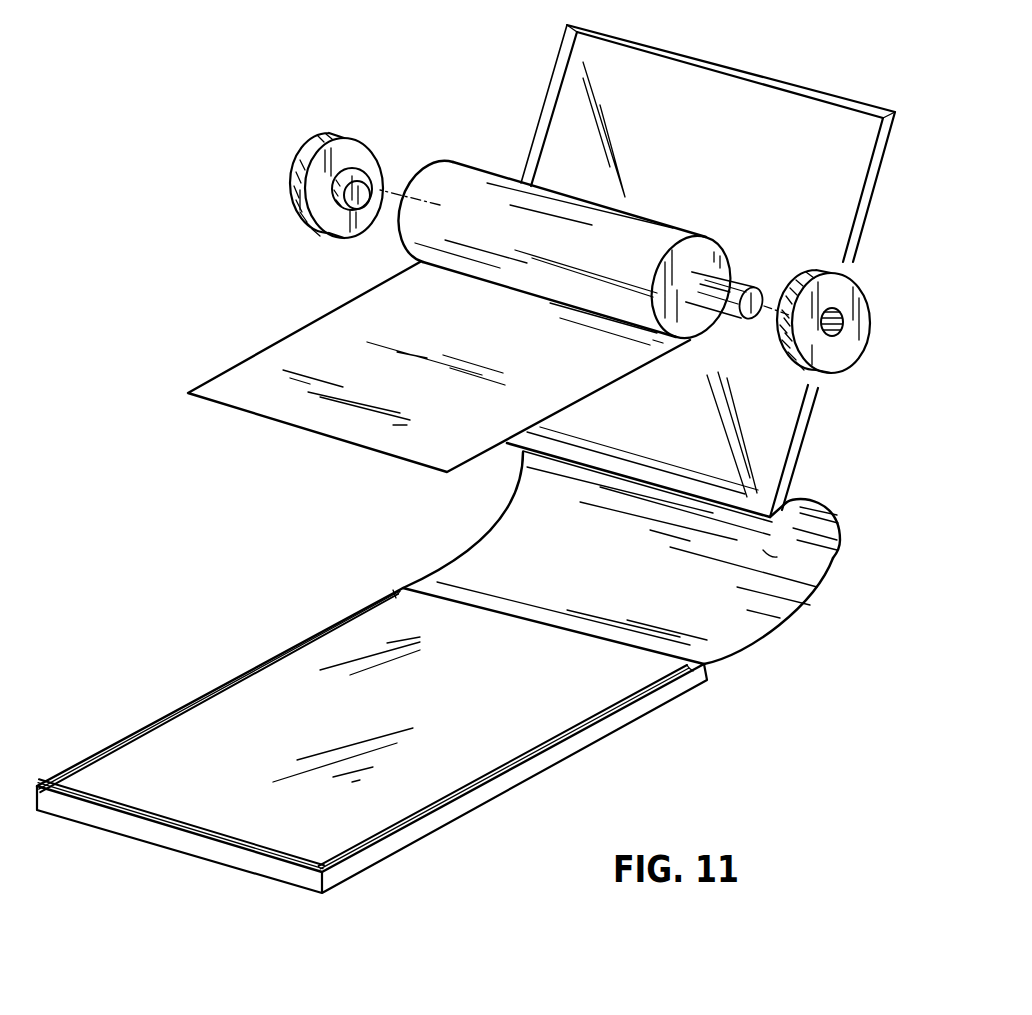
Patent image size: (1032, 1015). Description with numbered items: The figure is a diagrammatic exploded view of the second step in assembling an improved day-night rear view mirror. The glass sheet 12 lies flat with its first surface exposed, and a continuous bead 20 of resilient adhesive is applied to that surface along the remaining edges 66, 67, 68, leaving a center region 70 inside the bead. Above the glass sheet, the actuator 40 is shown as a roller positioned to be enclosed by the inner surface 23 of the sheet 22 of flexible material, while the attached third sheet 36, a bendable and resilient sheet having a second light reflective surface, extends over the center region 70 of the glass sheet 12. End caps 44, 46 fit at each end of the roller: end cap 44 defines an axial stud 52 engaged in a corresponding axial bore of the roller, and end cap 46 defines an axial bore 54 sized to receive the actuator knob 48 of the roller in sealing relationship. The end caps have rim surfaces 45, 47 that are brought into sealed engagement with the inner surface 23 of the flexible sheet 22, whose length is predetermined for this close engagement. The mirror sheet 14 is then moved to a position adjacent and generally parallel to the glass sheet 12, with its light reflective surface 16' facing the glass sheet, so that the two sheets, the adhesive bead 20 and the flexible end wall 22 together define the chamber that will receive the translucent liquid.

The first sheet of transparent material 12 is at (463, 807).
The second sheet 14 is at (847, 178).
The opposed surface of the mirror sheet 16' is at (670, 279).
The first wall of resilient adhesive material 20 is at (372, 740).
The sheet of flexible material 22 is at (638, 557).
The inner surface of the flexible wall 23 is at (827, 570).
The third sheet 36 is at (262, 365).
The actuator 40 is at (325, 253).
The end cap 44 is at (315, 164).
The rim surface 45 is at (318, 133).
The end cap 46 is at (824, 301).
The rim surface 47 is at (783, 333).
The actuator knob 48 is at (742, 283).
The axial stud 52 is at (367, 180).
The axial bore 54 is at (842, 322).
The edge 66 is at (567, 737).
The edge 67 is at (135, 818).
The edge 68 is at (265, 658).
The center region 70 is at (453, 699).